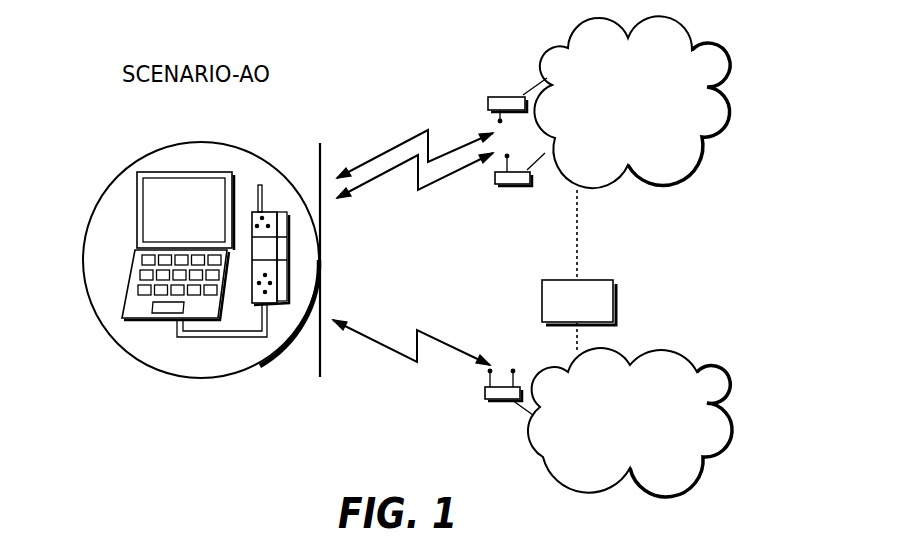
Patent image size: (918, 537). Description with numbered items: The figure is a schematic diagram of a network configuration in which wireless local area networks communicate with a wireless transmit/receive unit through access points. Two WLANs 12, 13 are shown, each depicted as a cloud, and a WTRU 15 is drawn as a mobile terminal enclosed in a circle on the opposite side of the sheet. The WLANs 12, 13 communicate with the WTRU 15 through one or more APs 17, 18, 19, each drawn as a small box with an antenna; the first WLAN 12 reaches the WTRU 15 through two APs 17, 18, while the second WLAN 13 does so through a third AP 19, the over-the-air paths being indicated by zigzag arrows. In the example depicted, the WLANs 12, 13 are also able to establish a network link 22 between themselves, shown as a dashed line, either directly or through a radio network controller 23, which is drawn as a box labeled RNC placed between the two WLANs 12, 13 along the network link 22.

The WLAN 12 is at (720, 52).
The WLAN 13 is at (710, 372).
The WTRU 15 is at (110, 170).
The AP 17 is at (493, 97).
The AP 18 is at (503, 184).
The AP 19 is at (503, 399).
The network link 22 is at (577, 248).
The radio network controller 23 is at (613, 300).